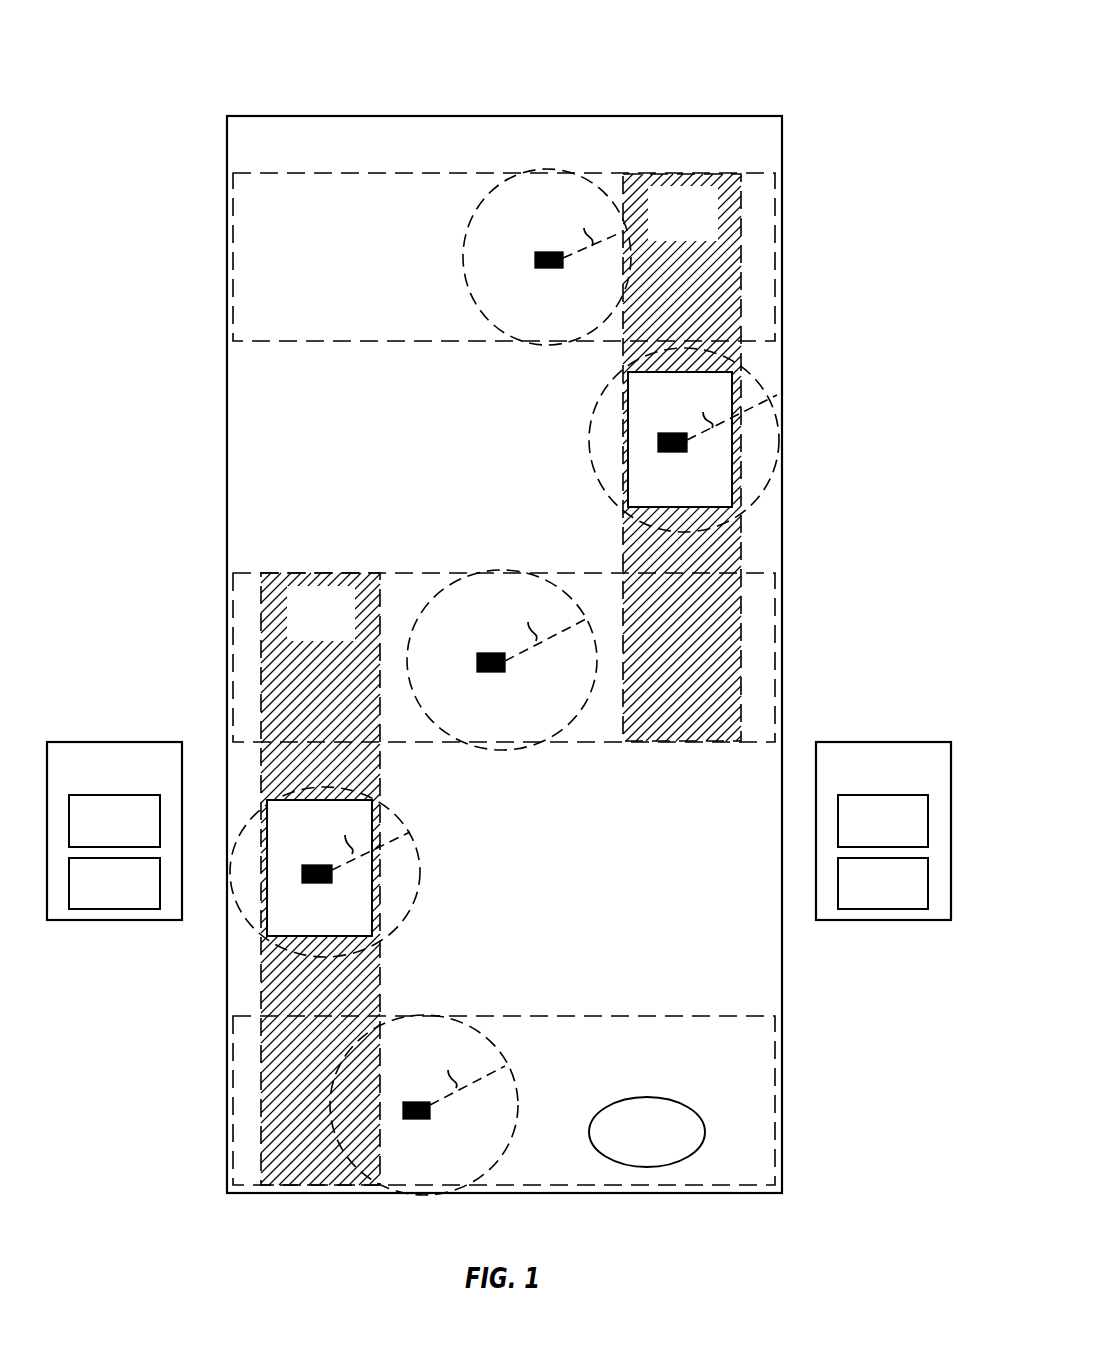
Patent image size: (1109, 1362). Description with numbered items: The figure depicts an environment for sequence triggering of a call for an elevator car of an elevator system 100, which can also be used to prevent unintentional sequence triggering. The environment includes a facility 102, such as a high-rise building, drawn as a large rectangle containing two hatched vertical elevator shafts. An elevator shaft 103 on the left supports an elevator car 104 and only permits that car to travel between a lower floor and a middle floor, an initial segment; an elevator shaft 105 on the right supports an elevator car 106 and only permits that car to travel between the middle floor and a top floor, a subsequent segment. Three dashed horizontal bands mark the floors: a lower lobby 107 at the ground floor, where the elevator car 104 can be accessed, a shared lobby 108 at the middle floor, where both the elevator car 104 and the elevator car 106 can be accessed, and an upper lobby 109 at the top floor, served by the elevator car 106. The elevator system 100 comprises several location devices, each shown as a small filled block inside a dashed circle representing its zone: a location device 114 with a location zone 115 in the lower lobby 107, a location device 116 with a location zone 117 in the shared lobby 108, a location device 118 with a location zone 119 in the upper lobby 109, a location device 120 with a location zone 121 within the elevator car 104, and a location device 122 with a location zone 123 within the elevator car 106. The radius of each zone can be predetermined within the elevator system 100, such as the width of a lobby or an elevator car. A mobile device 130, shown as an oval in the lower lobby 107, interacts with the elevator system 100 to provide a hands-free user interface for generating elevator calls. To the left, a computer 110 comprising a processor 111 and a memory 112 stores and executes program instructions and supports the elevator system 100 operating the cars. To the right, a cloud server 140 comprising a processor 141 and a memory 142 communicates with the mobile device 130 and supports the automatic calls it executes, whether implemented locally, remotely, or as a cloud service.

The elevator system 100 is at (708, 47).
The facility 102 is at (363, 157).
The elevator shaft 103 is at (338, 640).
The elevator car 104 is at (338, 925).
The elevator shaft 105 is at (700, 237).
The elevator car 106 is at (698, 497).
The lower lobby 107 is at (757, 1087).
The shared lobby 108 is at (435, 572).
The upper lobby 109 is at (348, 240).
The computer 110 is at (133, 780).
The processor 111 is at (133, 835).
The memory 112 is at (133, 898).
The location device 114 is at (411, 1101).
The location zone 115 is at (533, 1123).
The location device 116 is at (487, 653).
The location zone 117 is at (426, 741).
The location device 118 is at (546, 251).
The location zone 119 is at (482, 337).
The location device 120 is at (305, 865).
The location zone 121 is at (436, 883).
The location device 122 is at (664, 433).
The location zone 123 is at (585, 492).
The mobile device 130 is at (665, 1148).
The cloud server 140 is at (901, 780).
The processor 141 is at (901, 835).
The memory 142 is at (901, 898).